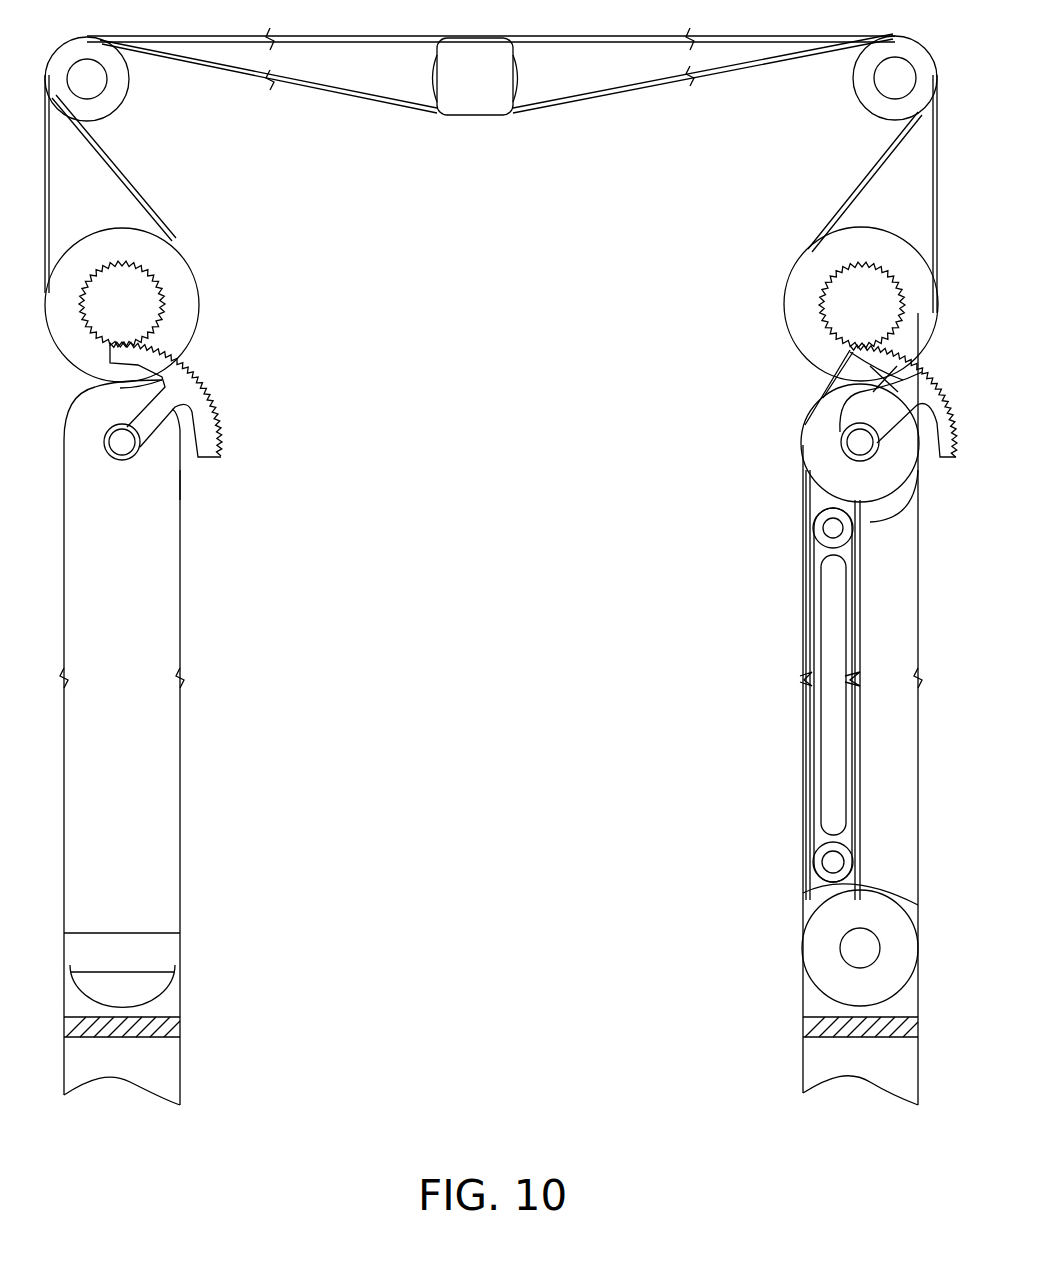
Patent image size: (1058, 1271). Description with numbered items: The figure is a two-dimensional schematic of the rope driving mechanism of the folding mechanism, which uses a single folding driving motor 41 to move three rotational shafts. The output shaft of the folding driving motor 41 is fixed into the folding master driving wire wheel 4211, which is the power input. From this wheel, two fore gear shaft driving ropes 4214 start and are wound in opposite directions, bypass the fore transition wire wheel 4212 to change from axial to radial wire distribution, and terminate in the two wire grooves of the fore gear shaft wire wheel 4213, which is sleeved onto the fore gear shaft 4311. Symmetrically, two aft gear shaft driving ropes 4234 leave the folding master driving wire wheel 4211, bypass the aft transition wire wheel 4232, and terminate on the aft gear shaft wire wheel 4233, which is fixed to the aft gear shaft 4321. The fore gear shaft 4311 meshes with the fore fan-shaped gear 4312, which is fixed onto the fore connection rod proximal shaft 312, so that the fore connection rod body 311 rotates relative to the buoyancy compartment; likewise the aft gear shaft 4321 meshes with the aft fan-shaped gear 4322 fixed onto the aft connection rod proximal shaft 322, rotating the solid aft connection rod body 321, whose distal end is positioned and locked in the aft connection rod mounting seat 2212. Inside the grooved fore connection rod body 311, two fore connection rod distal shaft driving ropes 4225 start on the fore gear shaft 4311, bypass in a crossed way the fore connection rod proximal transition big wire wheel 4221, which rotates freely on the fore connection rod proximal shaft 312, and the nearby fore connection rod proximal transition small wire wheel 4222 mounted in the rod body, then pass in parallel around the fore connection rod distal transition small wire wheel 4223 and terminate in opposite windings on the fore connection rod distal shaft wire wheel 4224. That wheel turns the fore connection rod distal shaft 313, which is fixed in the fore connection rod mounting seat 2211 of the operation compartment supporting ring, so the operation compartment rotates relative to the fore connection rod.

The folding driving motor 41 is at (455, 100).
The fore gear shaft wire wheel 4213 is at (519, 87).
The fore gear shaft driving rope 4214 is at (618, 85).
The aft gear shaft driving rope 4234 is at (225, 62).
The aft transition wire wheel 4232 is at (117, 80).
The fore transition wire wheel 4212 is at (855, 100).
The aft gear shaft wire wheel 4233 is at (148, 255).
The folding master driving wire wheel 4211 is at (810, 275).
The aft gear shaft 4321 is at (140, 300).
The fore gear shaft 4311 is at (845, 310).
The aft fan-shaped gear 4322 is at (185, 385).
The fore fan-shaped gear 4312 is at (875, 400).
The aft connection rod proximal shaft 322 is at (130, 448).
The fore connection rod proximal shaft 312 is at (850, 440).
The aft connection rod body 321 is at (110, 770).
The fore connection rod body 311 is at (890, 778).
The fore connection rod proximal transition big wire wheel 4221 is at (840, 468).
The fore connection rod proximal transition small wire wheel 4222 is at (825, 527).
The fore connection rod distal shaft driving rope 4225 is at (803, 610).
The fore connection rod distal transition small wire wheel 4223 is at (828, 862).
The fore connection rod distal shaft wire wheel 4224 is at (838, 905).
The fore connection rod distal shaft 313 is at (858, 950).
The aft connection rod mounting seat 2212 is at (180, 1025).
The fore connection rod mounting seat 2211 is at (815, 1032).